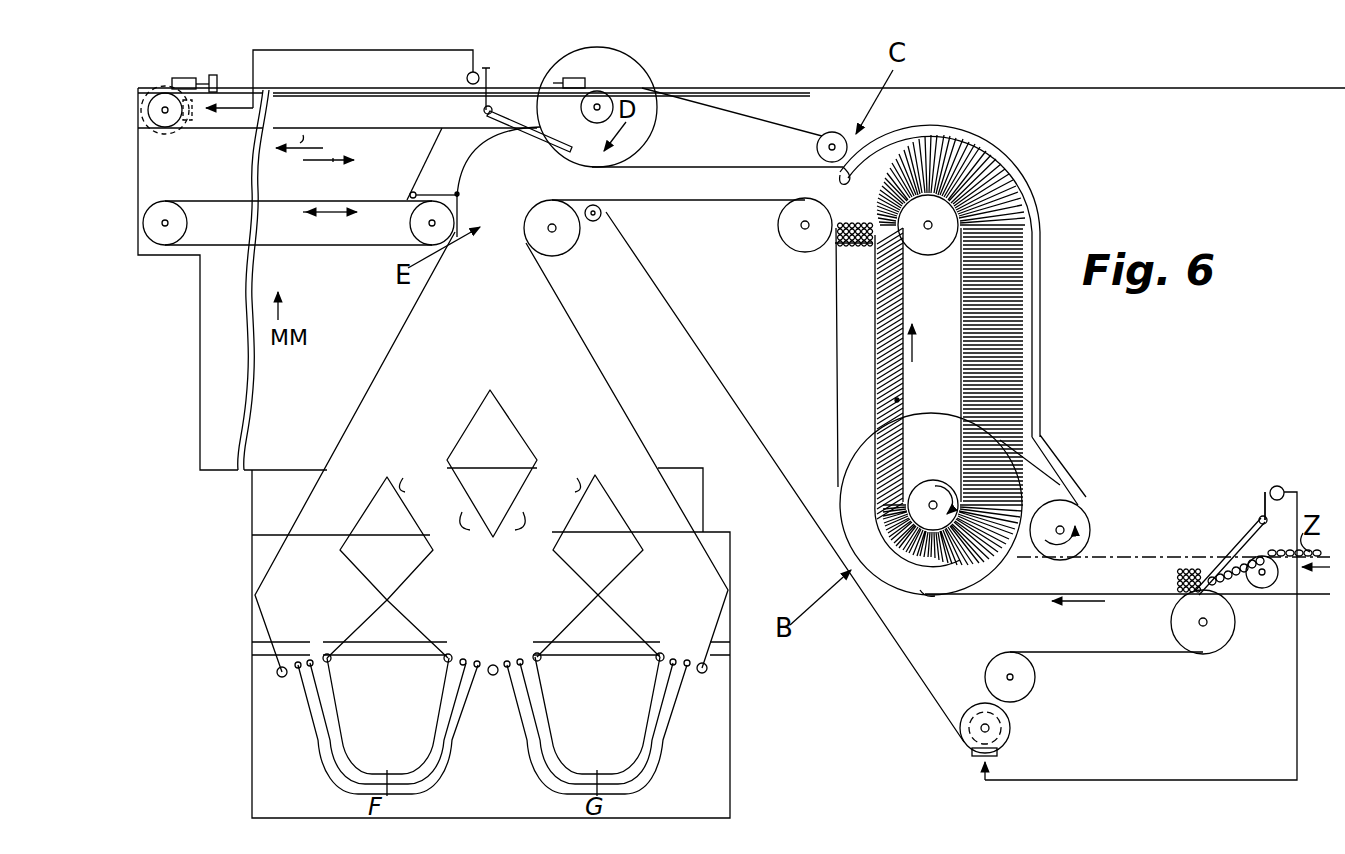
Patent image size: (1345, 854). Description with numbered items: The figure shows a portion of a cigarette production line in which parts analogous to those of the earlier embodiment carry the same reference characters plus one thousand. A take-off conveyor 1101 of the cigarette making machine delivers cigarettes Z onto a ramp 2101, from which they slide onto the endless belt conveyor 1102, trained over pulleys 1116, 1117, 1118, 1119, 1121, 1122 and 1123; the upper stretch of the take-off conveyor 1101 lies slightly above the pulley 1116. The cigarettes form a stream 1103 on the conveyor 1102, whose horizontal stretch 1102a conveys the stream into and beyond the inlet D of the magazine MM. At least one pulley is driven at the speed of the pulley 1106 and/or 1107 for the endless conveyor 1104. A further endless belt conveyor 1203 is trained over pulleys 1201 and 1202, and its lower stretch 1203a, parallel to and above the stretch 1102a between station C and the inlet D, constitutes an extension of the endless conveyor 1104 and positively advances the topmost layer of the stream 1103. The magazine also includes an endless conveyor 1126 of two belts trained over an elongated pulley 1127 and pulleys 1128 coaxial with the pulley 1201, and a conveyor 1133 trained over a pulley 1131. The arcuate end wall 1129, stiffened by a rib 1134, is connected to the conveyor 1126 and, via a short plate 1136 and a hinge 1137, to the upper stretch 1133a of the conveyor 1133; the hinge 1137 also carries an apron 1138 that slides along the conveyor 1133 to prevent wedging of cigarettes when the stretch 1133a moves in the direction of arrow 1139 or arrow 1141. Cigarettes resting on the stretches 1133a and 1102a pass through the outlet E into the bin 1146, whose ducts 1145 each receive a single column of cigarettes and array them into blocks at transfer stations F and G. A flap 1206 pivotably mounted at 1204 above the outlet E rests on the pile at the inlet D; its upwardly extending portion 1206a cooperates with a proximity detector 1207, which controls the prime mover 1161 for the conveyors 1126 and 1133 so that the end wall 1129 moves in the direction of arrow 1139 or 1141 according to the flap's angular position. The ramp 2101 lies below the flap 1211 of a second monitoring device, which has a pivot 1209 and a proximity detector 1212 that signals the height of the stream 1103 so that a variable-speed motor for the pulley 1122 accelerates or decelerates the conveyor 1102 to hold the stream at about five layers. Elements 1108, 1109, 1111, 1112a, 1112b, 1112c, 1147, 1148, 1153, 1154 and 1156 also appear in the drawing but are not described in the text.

The take-off conveyor 1101 is at (1265, 590).
The endless belt conveyor 1102 is at (836, 363).
The stretch of belt conveyor 1102a is at (702, 202).
The cigarette stream 1103 is at (845, 252).
The endless conveyor 1104 is at (880, 388).
The pulley 1106 is at (925, 257).
The pulley 1107 is at (940, 485).
The brush drive direction 1108 is at (958, 497).
The brush belt 1109 is at (898, 400).
The bristles 1111 is at (985, 180).
The lower housing wall 1112a is at (1010, 598).
The left housing wall 1112b is at (868, 388).
The upper housing wall 1112c is at (862, 140).
The pulley 1116 is at (1205, 655).
The pulley 1117 is at (917, 597).
The pulley 1118 is at (792, 249).
The pulley 1119 is at (556, 257).
The pulley 1121 is at (602, 215).
The pulley 1122 is at (1009, 736).
The pulley 1123 is at (1036, 678).
The endless belt conveyor 1126 is at (327, 88).
The elongated pulley 1127 is at (177, 120).
The pulley 1128 is at (642, 88).
The arcuate end wall 1129 is at (470, 178).
The pulley 1131 is at (162, 246).
The endless belt conveyor 1133 is at (282, 255).
The upper stretch 1133a is at (280, 222).
The stiffening rib 1134 is at (440, 128).
The short plate 1136 is at (420, 180).
The hinge 1137 is at (460, 196).
The apron 1138 is at (460, 210).
The arrow 1139 is at (300, 143).
The arrow 1141 is at (335, 162).
The ducts 1145 is at (464, 715).
The bin 1146 is at (387, 360).
The hopper 1147 is at (507, 459).
The hopper arm 1148 is at (403, 482).
The sensor 1153 is at (183, 79).
The sensor 1154 is at (578, 78).
The actuator 1156 is at (213, 75).
The prime mover 1161 is at (150, 130).
The pulley 1201 is at (604, 104).
The pulley 1202 is at (824, 131).
The endless belt conveyor 1203 is at (742, 96).
The lower stretch 1203a is at (738, 130).
The pivot 1204 is at (484, 110).
The flap 1206 is at (532, 142).
The upwardly extending portion 1206a is at (489, 80).
The proximity detector 1207 is at (477, 72).
The pivot 1209 is at (1260, 521).
The pivotable flap 1211 is at (1237, 557).
The proximity detector 1212 is at (1305, 462).
The ramp 2101 is at (1230, 574).